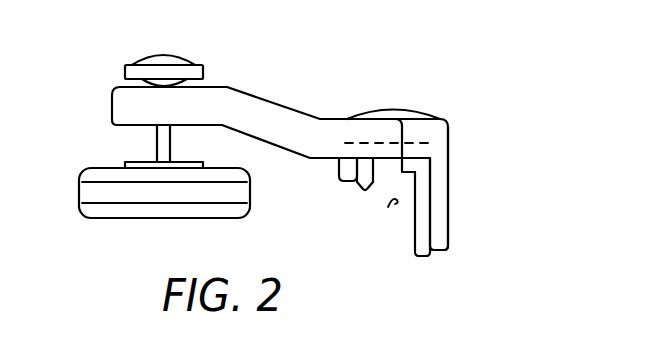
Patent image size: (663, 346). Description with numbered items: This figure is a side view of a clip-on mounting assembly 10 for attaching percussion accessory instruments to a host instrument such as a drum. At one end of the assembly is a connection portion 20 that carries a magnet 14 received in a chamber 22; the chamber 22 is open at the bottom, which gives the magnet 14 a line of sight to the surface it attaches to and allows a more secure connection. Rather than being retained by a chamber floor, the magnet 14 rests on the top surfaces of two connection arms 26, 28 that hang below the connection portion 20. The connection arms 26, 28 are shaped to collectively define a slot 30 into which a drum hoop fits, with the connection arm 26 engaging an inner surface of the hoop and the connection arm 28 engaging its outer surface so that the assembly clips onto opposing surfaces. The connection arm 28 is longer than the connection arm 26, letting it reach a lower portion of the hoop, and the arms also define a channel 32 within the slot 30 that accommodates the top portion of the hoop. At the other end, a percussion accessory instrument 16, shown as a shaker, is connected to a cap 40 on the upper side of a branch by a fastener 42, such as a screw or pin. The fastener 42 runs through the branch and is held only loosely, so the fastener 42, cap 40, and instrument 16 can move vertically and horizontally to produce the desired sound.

The mounting assembly 10 is at (455, 74).
The magnet 14 is at (360, 150).
The percussion accessory instrument 16 is at (120, 213).
The connection portion 20 is at (466, 120).
The chamber 22 is at (385, 112).
The connection arm 26 is at (365, 192).
The connection arm 28 is at (423, 257).
The slot 30 is at (393, 207).
The channel 32 is at (387, 160).
The cap 40 is at (160, 72).
The fastener 42 is at (158, 152).